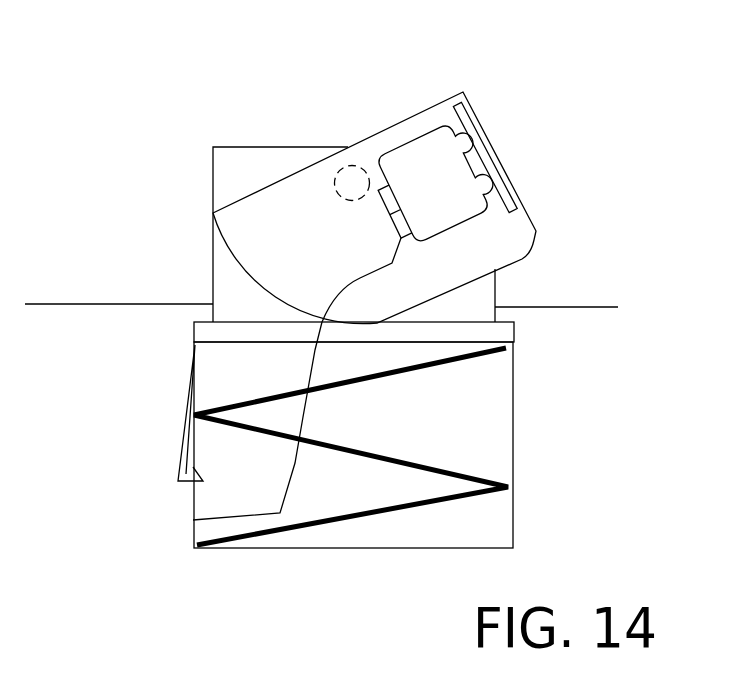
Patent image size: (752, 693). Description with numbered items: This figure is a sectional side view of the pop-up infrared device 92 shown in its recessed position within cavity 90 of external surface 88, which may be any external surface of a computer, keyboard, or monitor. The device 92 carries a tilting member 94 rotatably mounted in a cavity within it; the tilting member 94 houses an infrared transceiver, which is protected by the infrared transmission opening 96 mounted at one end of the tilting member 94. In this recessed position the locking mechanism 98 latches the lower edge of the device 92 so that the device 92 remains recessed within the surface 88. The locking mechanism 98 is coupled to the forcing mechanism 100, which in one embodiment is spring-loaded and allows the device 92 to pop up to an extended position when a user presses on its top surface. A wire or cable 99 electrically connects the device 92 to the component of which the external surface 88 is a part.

The external surface 88 is at (568, 307).
The cavity 90 is at (458, 428).
The infrared device 92 is at (267, 147).
The tilting member 94 is at (385, 127).
The infrared transmission opening 96 is at (492, 152).
The locking mechanism 98 is at (183, 475).
The wire or cable 99 is at (340, 300).
The forcing mechanism 100 is at (347, 517).